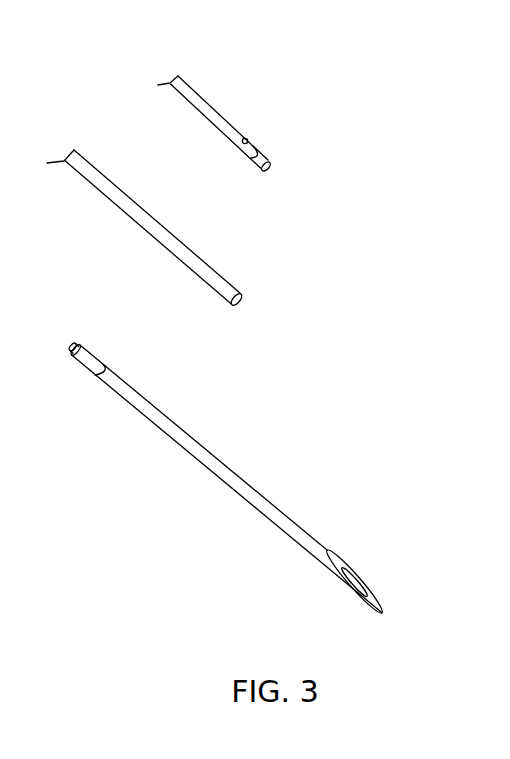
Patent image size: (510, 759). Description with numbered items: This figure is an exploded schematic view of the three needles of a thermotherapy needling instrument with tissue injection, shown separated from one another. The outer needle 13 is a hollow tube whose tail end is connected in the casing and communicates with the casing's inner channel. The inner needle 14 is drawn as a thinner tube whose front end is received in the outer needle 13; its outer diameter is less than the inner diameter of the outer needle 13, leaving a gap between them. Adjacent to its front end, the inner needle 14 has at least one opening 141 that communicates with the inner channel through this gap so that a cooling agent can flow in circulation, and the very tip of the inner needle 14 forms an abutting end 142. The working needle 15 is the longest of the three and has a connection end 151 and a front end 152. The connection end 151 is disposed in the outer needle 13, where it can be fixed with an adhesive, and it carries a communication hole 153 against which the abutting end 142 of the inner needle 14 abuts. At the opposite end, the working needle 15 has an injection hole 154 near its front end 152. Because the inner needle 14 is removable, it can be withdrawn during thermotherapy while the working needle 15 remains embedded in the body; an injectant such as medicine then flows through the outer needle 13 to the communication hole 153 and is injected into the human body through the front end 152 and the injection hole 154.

The outer needle 13 is at (153, 231).
The inner needle 14 is at (207, 112).
The opening 141 is at (247, 140).
The abutting end 142 is at (266, 155).
The working needle 15 is at (237, 450).
The connection end 151 is at (97, 356).
The front end 152 is at (372, 596).
The communication hole 153 is at (72, 347).
The injection hole 154 is at (366, 576).